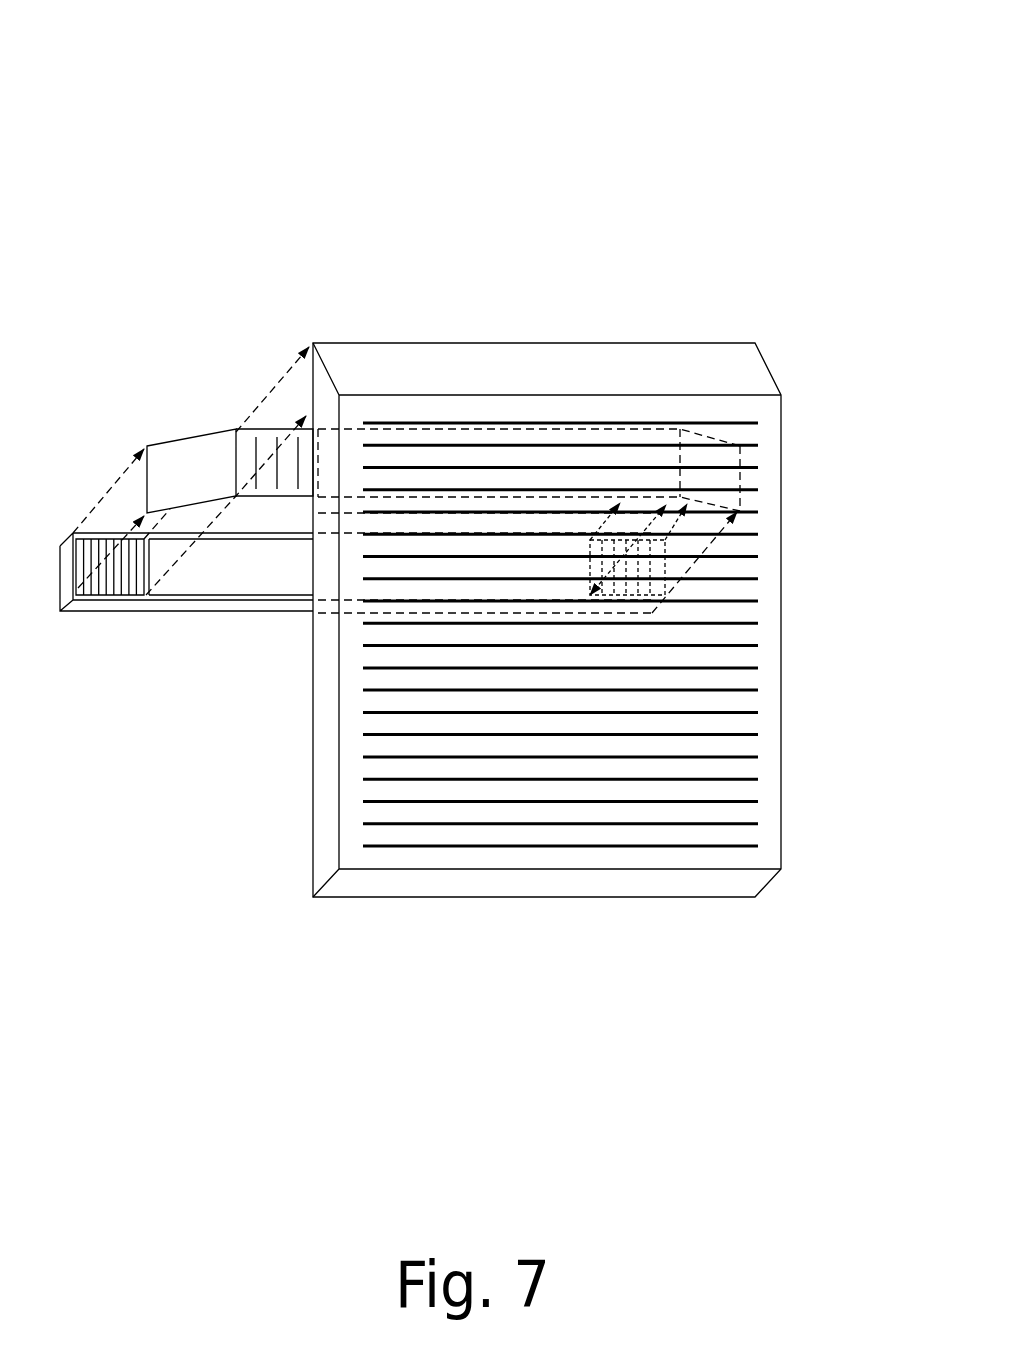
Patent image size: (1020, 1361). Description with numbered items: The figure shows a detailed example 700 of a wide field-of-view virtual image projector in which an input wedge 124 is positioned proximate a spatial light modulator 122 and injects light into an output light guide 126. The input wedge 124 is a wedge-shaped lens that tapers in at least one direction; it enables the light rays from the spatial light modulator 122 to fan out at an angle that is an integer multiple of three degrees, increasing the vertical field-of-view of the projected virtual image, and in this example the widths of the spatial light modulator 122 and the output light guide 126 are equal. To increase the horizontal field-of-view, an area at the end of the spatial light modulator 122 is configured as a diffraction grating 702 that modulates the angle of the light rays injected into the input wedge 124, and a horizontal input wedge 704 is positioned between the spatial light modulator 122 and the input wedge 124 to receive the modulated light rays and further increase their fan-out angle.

The detailed example of the virtual image projector 700 is at (137, 42).
The spatial light modulator 122 is at (186, 600).
The input wedge 124 is at (510, 315).
The output light guide 126 is at (796, 571).
The diffraction grating 702 is at (90, 583).
The horizontal input wedge 704 is at (213, 414).